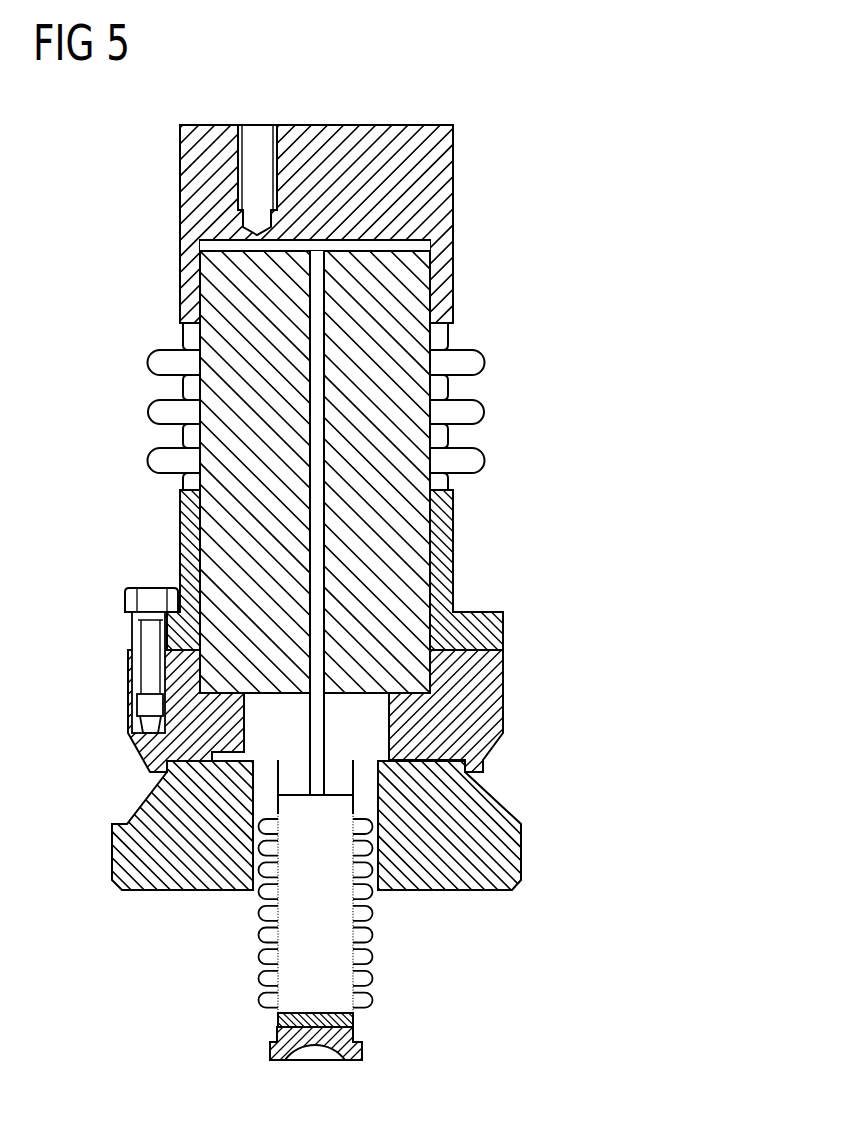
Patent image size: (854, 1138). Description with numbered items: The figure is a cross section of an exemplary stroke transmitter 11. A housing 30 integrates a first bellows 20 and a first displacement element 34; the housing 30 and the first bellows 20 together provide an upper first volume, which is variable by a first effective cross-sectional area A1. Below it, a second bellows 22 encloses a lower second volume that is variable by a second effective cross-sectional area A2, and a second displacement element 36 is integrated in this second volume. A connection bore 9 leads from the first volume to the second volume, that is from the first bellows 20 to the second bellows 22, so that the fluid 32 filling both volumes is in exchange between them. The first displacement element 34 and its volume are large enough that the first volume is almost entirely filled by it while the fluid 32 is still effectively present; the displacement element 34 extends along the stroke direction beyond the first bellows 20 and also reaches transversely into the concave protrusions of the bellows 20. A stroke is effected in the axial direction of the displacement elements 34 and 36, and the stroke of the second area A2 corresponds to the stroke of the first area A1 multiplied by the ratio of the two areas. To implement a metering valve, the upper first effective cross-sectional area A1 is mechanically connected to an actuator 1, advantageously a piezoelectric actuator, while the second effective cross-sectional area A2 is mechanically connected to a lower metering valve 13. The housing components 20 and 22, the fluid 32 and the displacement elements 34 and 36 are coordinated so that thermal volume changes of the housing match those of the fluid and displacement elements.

The actuator 1 is at (327, 100).
The housing 30 is at (440, 167).
The first effective cross-sectional area A1 is at (416, 241).
The first displacement element 34 is at (410, 533).
The first bellows 20 is at (334, 545).
The stroke transmitter 11 is at (107, 360).
The fluid 32 is at (162, 410).
The second bellows 22 is at (374, 862).
The second displacement element 36 is at (290, 912).
The connection bore 9 is at (316, 727).
The second effective cross-sectional area A2 is at (325, 1012).
The metering valve 13 is at (335, 1110).